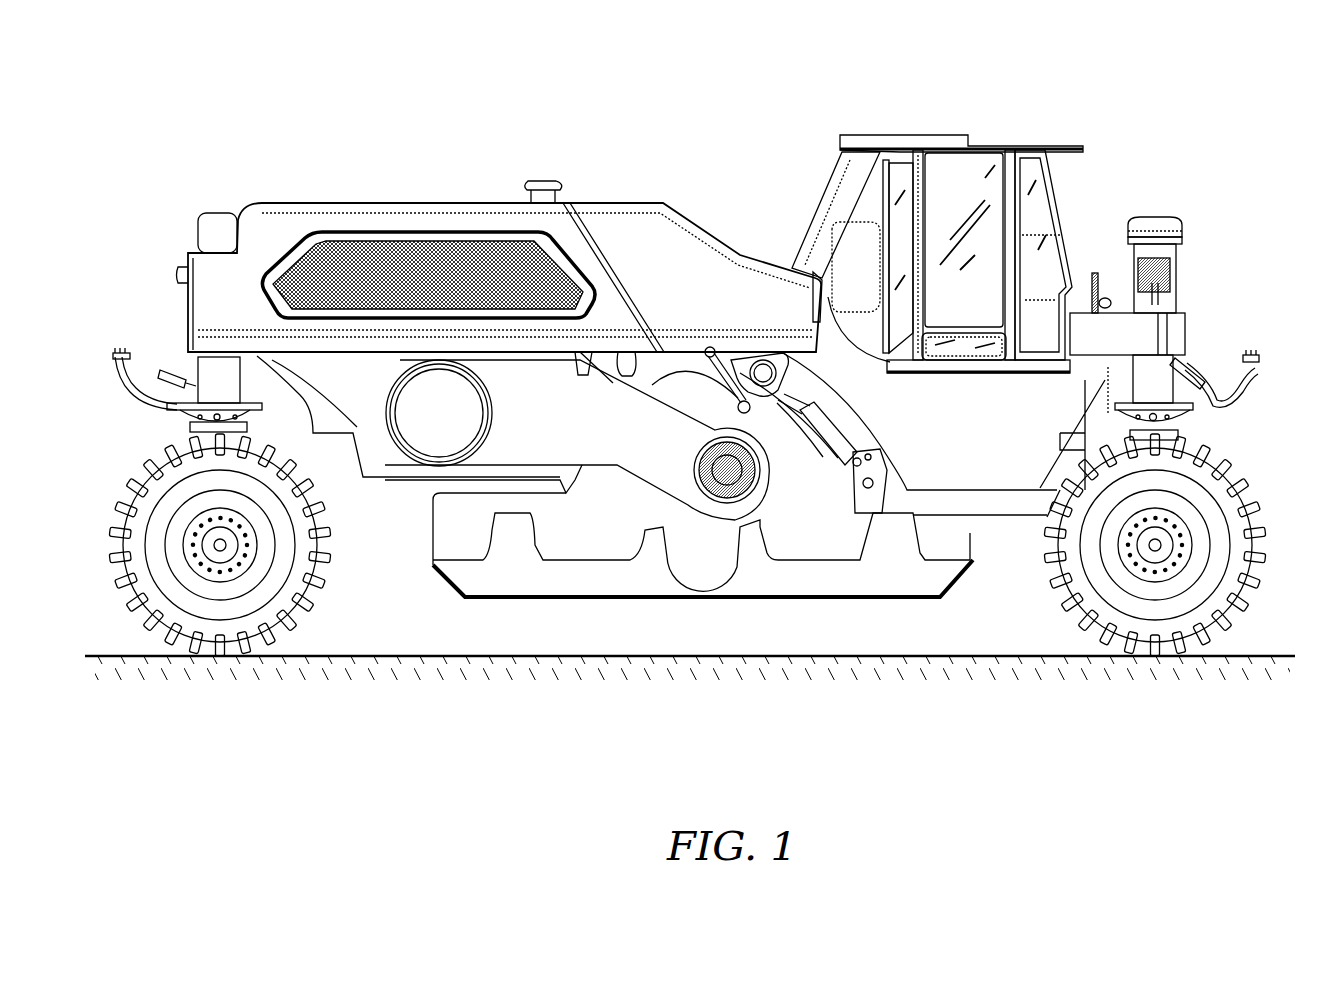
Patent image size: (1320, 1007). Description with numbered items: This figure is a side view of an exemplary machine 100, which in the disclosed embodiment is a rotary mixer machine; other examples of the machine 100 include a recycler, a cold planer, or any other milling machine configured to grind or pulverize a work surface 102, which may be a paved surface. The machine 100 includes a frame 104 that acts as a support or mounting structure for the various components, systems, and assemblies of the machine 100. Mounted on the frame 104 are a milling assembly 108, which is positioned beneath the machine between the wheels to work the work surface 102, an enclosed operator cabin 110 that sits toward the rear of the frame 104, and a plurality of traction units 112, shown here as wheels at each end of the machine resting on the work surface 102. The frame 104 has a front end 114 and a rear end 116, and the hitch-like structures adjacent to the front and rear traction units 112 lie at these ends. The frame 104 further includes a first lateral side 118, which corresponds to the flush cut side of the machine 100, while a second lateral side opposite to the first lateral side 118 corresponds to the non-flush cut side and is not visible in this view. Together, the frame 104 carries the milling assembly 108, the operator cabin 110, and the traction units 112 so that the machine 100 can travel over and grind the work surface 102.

The machine 100 is at (1158, 80).
The work surface 102 is at (1273, 648).
The frame 104 is at (971, 472).
The milling assembly 108 is at (499, 583).
The operator cabin 110 is at (1061, 194).
The traction units 112 is at (125, 578).
The front end 114 is at (1215, 355).
The rear end 116 is at (123, 447).
The first lateral side 118 is at (1027, 483).